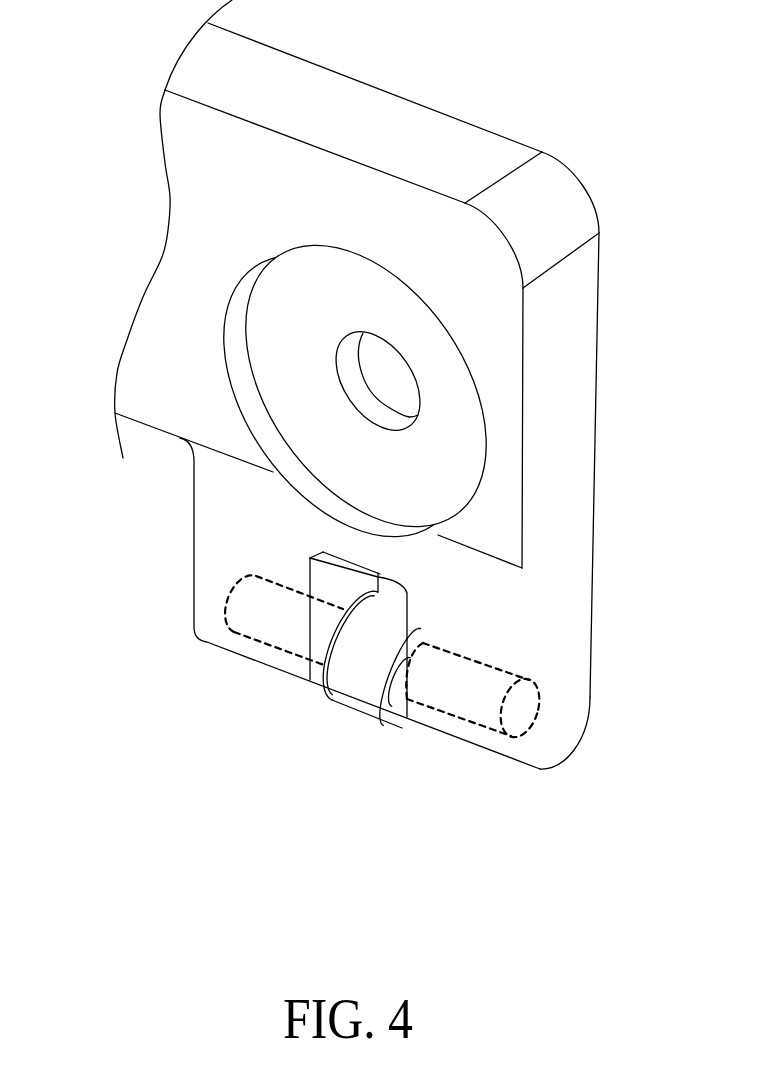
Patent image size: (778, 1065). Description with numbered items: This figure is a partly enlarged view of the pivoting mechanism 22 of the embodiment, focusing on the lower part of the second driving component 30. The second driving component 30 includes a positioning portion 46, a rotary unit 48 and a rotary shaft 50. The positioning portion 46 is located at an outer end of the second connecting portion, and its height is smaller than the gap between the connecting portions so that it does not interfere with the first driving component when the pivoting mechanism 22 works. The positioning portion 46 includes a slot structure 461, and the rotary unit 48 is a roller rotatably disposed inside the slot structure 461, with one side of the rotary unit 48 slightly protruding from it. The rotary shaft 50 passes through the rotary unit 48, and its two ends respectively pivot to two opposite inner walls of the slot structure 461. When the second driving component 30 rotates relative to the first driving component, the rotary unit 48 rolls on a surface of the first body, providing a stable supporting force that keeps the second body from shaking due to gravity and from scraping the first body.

The pivoting mechanism 22 is at (387, 403).
The second driving component 30 is at (560, 351).
The positioning portion 46 is at (230, 488).
The slot structure 461 is at (403, 588).
The rotary unit 48 is at (362, 697).
The rotary shaft 50 is at (258, 640).